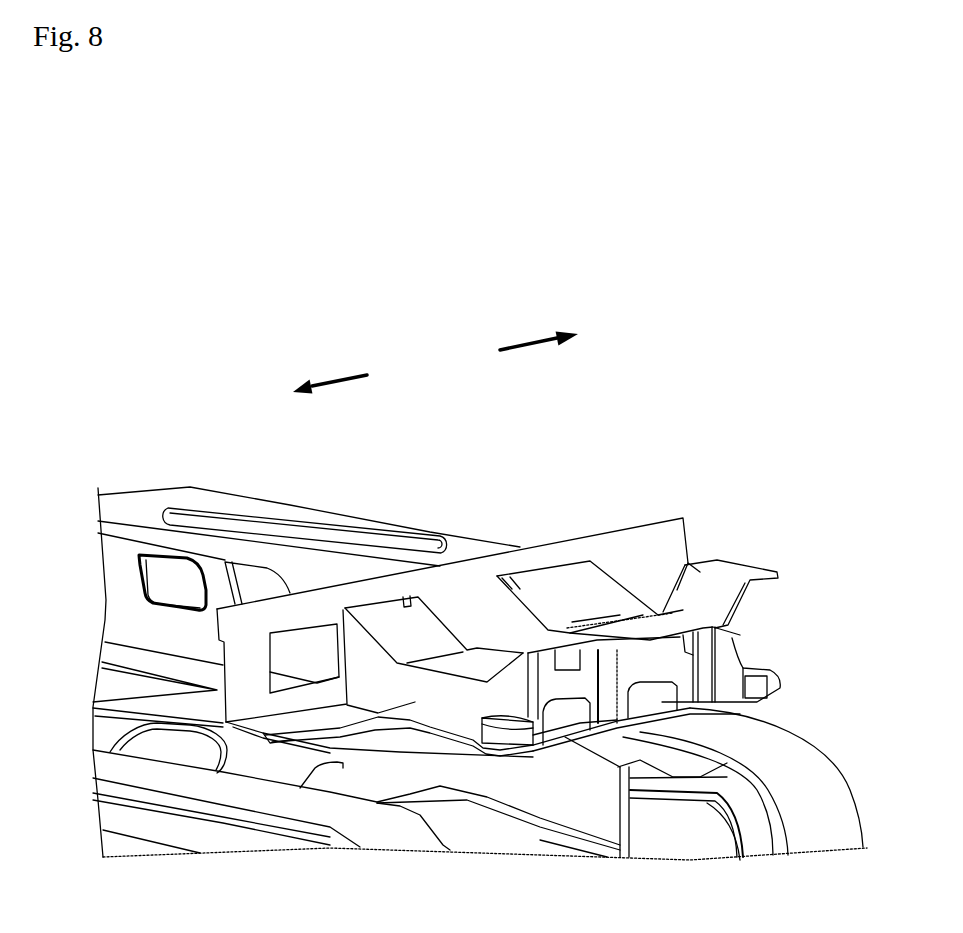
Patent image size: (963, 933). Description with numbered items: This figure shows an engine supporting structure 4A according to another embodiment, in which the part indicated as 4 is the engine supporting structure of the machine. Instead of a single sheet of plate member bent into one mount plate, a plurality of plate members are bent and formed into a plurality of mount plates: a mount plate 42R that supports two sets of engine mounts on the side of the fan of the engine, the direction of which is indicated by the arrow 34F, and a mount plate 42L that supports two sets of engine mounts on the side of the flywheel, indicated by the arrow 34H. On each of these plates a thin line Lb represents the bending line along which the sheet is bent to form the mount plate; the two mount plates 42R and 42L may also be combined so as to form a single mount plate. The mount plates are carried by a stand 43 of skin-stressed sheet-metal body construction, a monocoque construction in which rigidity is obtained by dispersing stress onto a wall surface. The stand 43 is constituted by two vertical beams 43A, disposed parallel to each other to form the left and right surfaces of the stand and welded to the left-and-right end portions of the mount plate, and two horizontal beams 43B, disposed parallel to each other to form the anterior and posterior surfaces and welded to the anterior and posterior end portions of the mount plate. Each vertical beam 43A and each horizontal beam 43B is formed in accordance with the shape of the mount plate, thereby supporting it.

The vehicle body frame 4 is at (537, 664).
The engine supporting structure 4A is at (800, 549).
The arrow indicating flywheel side of the engine 34H is at (330, 369).
The arrow indicating fan side of the engine 34F is at (539, 330).
The mount plate 42L is at (460, 622).
The mount plate 42R is at (629, 587).
The bending line Lb is at (442, 652).
The stand 43 is at (373, 712).
The vertical beam 43A is at (456, 707).
The horizontal beam 43B is at (669, 690).